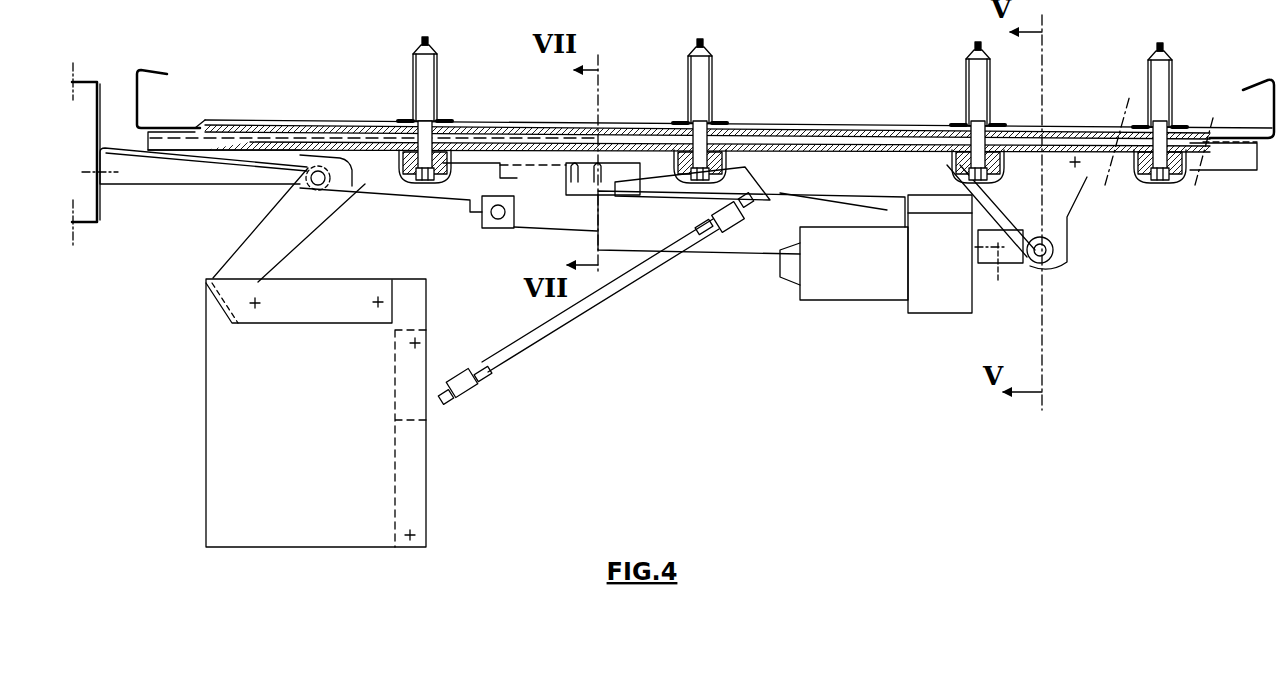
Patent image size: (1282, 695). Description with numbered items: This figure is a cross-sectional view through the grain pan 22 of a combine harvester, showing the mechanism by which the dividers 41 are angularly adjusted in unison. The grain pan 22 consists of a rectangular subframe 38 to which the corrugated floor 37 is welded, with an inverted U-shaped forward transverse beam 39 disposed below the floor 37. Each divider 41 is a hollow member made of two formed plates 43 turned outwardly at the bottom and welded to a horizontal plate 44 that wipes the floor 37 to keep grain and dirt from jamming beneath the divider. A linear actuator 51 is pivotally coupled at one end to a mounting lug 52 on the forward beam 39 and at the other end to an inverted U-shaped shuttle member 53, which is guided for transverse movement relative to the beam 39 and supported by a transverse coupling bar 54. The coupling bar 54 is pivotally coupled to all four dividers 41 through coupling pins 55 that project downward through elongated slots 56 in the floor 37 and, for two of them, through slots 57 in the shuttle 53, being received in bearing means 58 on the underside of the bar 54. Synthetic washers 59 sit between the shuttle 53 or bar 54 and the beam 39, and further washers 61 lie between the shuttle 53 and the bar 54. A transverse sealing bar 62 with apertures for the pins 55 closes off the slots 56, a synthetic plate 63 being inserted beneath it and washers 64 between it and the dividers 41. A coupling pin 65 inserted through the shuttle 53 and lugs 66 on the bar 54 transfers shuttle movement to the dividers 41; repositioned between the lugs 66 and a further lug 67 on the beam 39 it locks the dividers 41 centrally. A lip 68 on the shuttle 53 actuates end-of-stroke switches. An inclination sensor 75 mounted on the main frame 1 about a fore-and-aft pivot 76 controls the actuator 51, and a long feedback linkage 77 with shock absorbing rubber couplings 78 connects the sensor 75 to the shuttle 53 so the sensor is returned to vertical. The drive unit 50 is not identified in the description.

The main frame 1 is at (99, 222).
The grain pan 22 is at (813, 98).
The corrugated floor 37 is at (266, 118).
The rectangular subframe 38 is at (137, 79).
The forward transverse beam 39 is at (1237, 171).
The divider 41 is at (430, 41).
The formed plate 43 is at (413, 80).
The horizontal plate 44 is at (410, 120).
The motor 50 is at (922, 314).
The linear actuator 51 is at (700, 256).
The mounting lug 52 is at (1078, 270).
The shuttle member 53 is at (433, 200).
The transverse coupling bar 54 is at (888, 165).
The coupling pin 55 is at (363, 193).
The elongated slot 56 is at (462, 135).
The elongated slot 57 is at (442, 212).
The bearing means 58 is at (395, 210).
The washer 59 is at (372, 124).
The washer 61 is at (337, 205).
The transverse sealing bar 62 is at (540, 124).
The synthetic plate 63 is at (508, 126).
The washer 64 is at (375, 128).
The coupling pin 65 is at (552, 192).
The lug 66 is at (588, 188).
The further lug 67 is at (627, 212).
The lip 68 is at (468, 222).
The inclination sensor 75 is at (206, 430).
The pivot 76 is at (296, 188).
The mechanical linkage 77 is at (604, 303).
The shock absorbing rubber coupling 78 is at (735, 225).